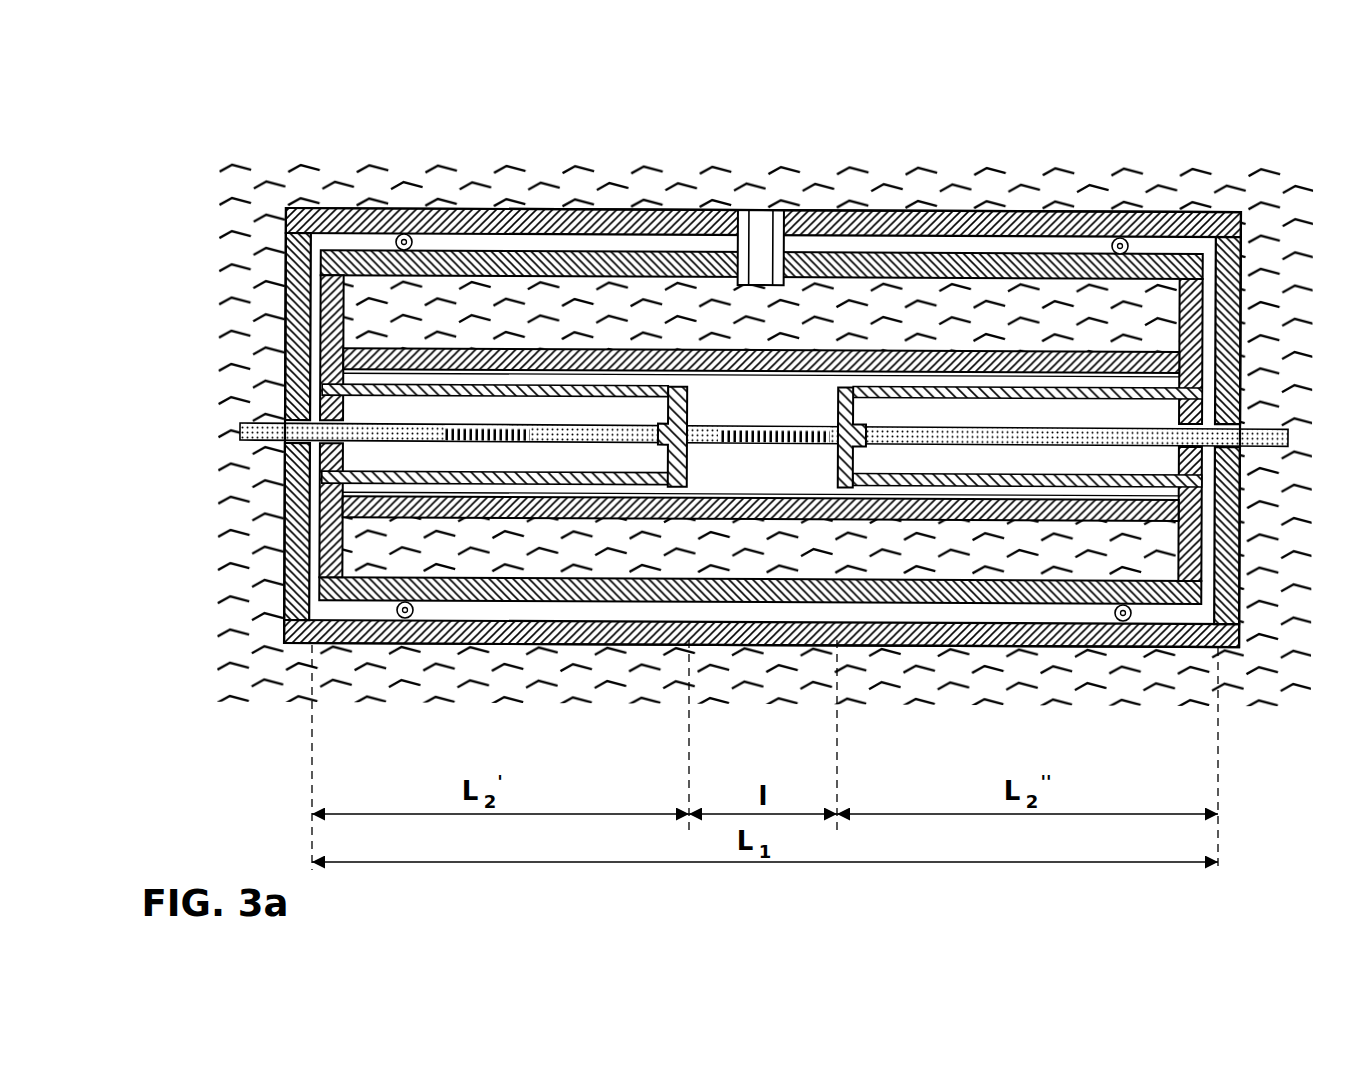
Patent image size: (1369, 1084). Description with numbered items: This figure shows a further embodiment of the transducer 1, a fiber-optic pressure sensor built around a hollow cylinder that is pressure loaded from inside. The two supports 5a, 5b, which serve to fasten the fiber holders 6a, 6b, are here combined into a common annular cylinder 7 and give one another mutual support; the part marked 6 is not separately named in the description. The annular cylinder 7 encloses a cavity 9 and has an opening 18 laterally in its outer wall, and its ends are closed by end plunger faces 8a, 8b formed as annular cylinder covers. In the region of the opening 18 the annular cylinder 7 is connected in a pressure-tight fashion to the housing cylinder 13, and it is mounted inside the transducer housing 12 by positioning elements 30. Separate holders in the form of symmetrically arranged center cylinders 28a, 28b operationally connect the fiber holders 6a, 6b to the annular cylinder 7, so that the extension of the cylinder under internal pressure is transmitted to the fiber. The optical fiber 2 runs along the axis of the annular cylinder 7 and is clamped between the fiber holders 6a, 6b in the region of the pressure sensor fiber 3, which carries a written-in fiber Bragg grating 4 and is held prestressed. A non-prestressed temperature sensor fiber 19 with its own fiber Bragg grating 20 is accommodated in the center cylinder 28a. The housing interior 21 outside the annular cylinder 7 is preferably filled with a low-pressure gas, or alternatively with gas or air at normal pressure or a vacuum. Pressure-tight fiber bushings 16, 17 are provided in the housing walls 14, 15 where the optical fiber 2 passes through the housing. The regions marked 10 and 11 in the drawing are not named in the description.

The transducer 1 is at (204, 151).
The optical fiber 2 is at (240, 425).
The pressure sensor fiber 3 is at (845, 422).
The fiber Bragg grating 4 is at (785, 424).
The support 5a is at (610, 374).
The support 5b is at (935, 375).
The inner housing 6 is at (683, 265).
The fiber holder 6a is at (686, 386).
The fiber holder 6b is at (800, 590).
The annular cylinder 7 is at (698, 606).
The end plunger face 8a is at (318, 321).
The end plunger face 8b is at (1240, 314).
The cavity 9 is at (637, 320).
The filler material 10 is at (610, 313).
The surrounding soil 11 is at (563, 190).
The transducer housing 12 is at (530, 205).
The housing cylinder 13 is at (547, 438).
The housing wall 14 is at (292, 570).
The housing wall 15 is at (1242, 565).
The pressure-tight fiber bushing 16 is at (283, 418).
The pressure-tight fiber bushing 17 is at (1243, 425).
The opening 18 is at (758, 225).
The temperature sensor fiber 19 is at (468, 438).
The fiber Bragg grating 20 is at (440, 233).
The housing interior 21 is at (351, 207).
The center cylinder 28a is at (565, 479).
The center cylinder 28b is at (1078, 486).
The positioning element 30 is at (398, 238).